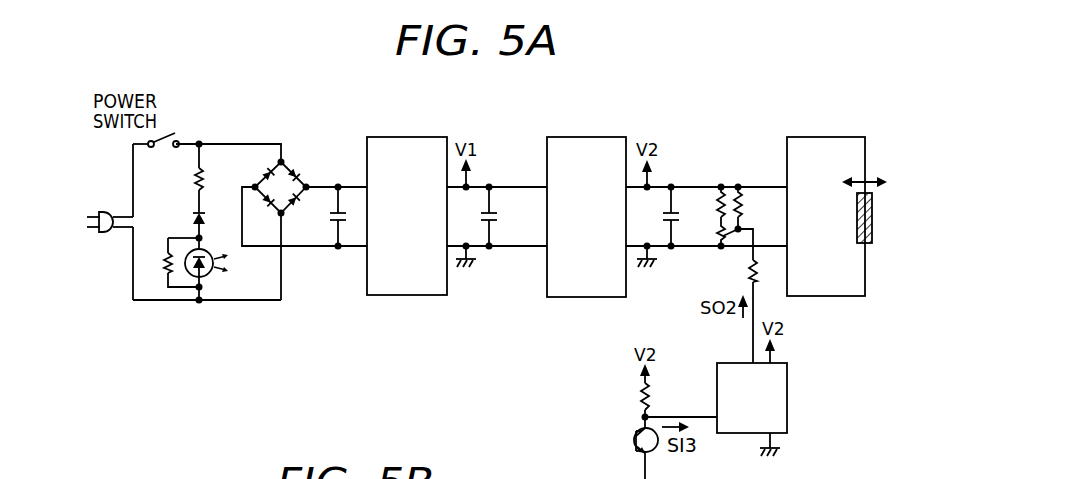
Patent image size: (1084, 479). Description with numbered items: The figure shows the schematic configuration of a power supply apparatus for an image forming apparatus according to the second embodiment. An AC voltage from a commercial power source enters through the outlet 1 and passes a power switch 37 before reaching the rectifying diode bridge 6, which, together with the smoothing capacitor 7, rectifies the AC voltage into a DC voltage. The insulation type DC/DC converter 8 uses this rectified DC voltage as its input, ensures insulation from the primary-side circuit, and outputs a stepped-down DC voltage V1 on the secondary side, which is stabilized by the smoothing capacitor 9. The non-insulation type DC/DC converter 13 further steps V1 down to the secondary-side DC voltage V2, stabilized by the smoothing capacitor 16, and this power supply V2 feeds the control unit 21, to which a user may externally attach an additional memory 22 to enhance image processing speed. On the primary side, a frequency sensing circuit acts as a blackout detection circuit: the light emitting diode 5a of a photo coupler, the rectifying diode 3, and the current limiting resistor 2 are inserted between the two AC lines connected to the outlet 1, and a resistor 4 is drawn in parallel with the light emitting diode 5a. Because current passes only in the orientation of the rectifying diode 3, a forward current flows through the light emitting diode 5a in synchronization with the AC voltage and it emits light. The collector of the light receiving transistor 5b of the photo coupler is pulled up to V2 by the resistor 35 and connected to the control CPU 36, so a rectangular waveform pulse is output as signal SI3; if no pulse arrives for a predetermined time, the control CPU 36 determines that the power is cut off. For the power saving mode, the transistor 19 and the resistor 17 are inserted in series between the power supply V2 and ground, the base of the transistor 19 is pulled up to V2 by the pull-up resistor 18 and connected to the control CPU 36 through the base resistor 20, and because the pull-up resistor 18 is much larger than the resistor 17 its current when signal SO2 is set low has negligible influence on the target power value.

The outlet 1 is at (105, 211).
The power switch 37 is at (168, 132).
The current limiting resistor 2 is at (194, 180).
The rectifying diode 3 is at (194, 219).
The resistor 4 is at (165, 264).
The light emitting diode 5a is at (191, 272).
The rectifying diode bridge 6 is at (287, 162).
The smoothing capacitor 7 is at (330, 224).
The insulation type DC/DC converter 8 is at (428, 137).
The smoothing capacitor 9 is at (492, 210).
The non-insulation type DC/DC converter 13 is at (608, 137).
The smoothing capacitor 16 is at (674, 210).
The resistor 17 is at (723, 192).
The pull-up resistor 18 is at (742, 200).
The transistor 19 is at (718, 236).
The base resistor 20 is at (748, 268).
The control unit 21 is at (840, 137).
The additional memory 22 is at (858, 238).
The resistor 35 is at (640, 395).
The control CPU 36 is at (787, 400).
The light receiving transistor 5b is at (630, 445).